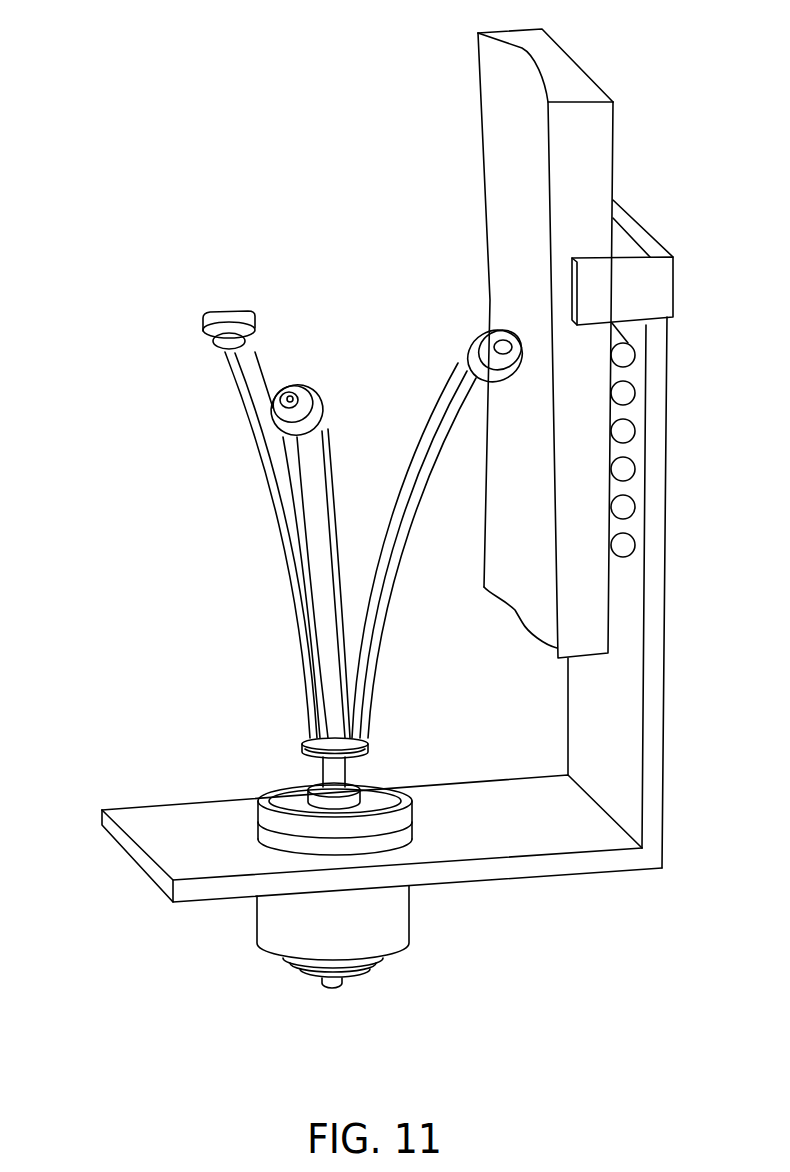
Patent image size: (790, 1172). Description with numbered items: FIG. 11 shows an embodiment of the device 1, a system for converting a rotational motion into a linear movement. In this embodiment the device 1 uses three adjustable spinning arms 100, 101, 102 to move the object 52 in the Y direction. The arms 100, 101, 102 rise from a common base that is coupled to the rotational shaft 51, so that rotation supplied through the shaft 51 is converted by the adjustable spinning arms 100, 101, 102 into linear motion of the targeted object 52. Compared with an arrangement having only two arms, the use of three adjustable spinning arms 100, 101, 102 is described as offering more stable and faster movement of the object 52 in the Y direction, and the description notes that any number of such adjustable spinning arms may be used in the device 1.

The device 1 is at (146, 255).
The rotational shaft 51 is at (424, 918).
The object 52 is at (492, 128).
The adjustable spinning arm 100 is at (411, 386).
The adjustable spinning arm 101 is at (237, 440).
The adjustable spinning arm 102 is at (306, 521).